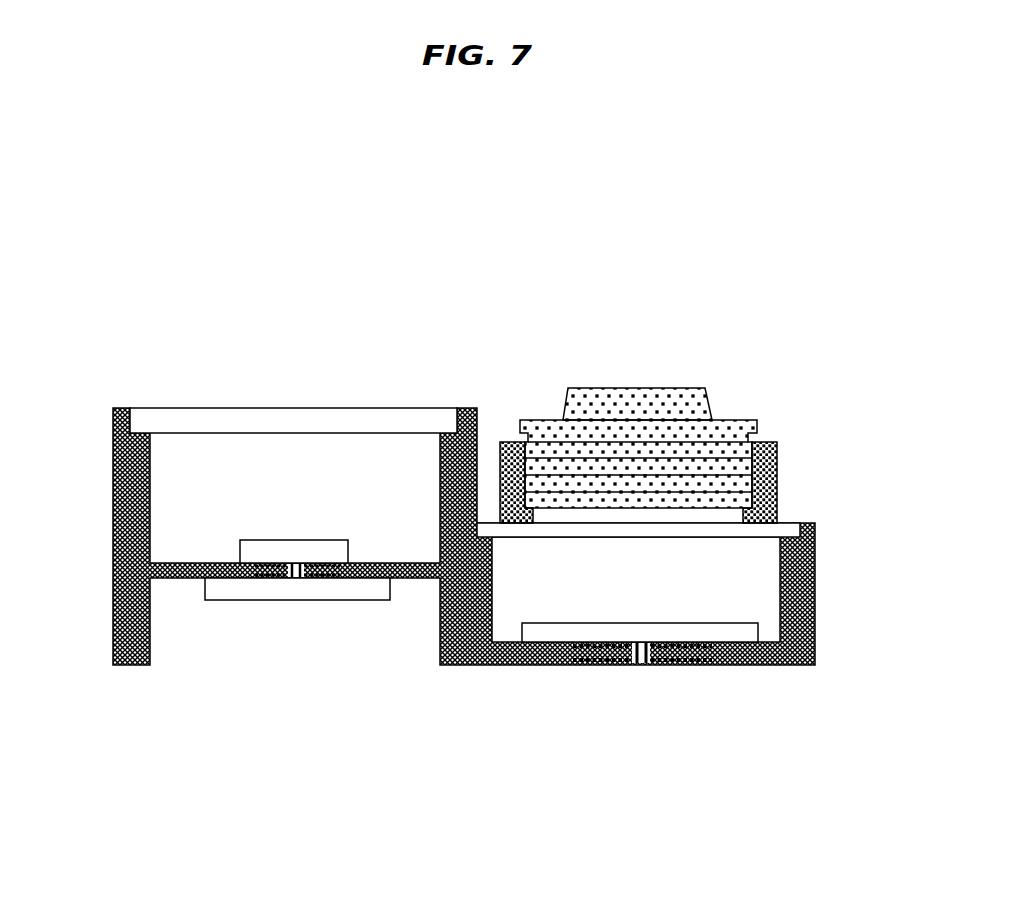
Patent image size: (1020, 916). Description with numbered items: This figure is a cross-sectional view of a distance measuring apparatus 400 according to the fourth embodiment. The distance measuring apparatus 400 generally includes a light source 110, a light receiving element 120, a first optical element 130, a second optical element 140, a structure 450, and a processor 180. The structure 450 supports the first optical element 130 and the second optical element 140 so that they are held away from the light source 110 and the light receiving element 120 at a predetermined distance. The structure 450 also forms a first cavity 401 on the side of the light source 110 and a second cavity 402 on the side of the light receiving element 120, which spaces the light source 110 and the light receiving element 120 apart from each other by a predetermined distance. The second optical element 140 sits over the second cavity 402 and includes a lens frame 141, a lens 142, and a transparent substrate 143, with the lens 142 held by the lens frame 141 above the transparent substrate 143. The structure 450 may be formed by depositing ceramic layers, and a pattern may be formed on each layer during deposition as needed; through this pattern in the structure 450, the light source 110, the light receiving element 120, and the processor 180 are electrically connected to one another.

The distance measuring apparatus 400 is at (172, 246).
The first cavity 401 is at (189, 461).
The second cavity 402 is at (742, 577).
The light source 110 is at (240, 552).
The light receiving element 120 is at (758, 628).
The first optical element 130 is at (348, 408).
The second optical element 140 is at (628, 376).
The lens frame 141 is at (777, 458).
The lens 142 is at (727, 420).
The transparent substrate 143 is at (800, 524).
The processor 180 is at (296, 600).
The structure 450 is at (508, 665).